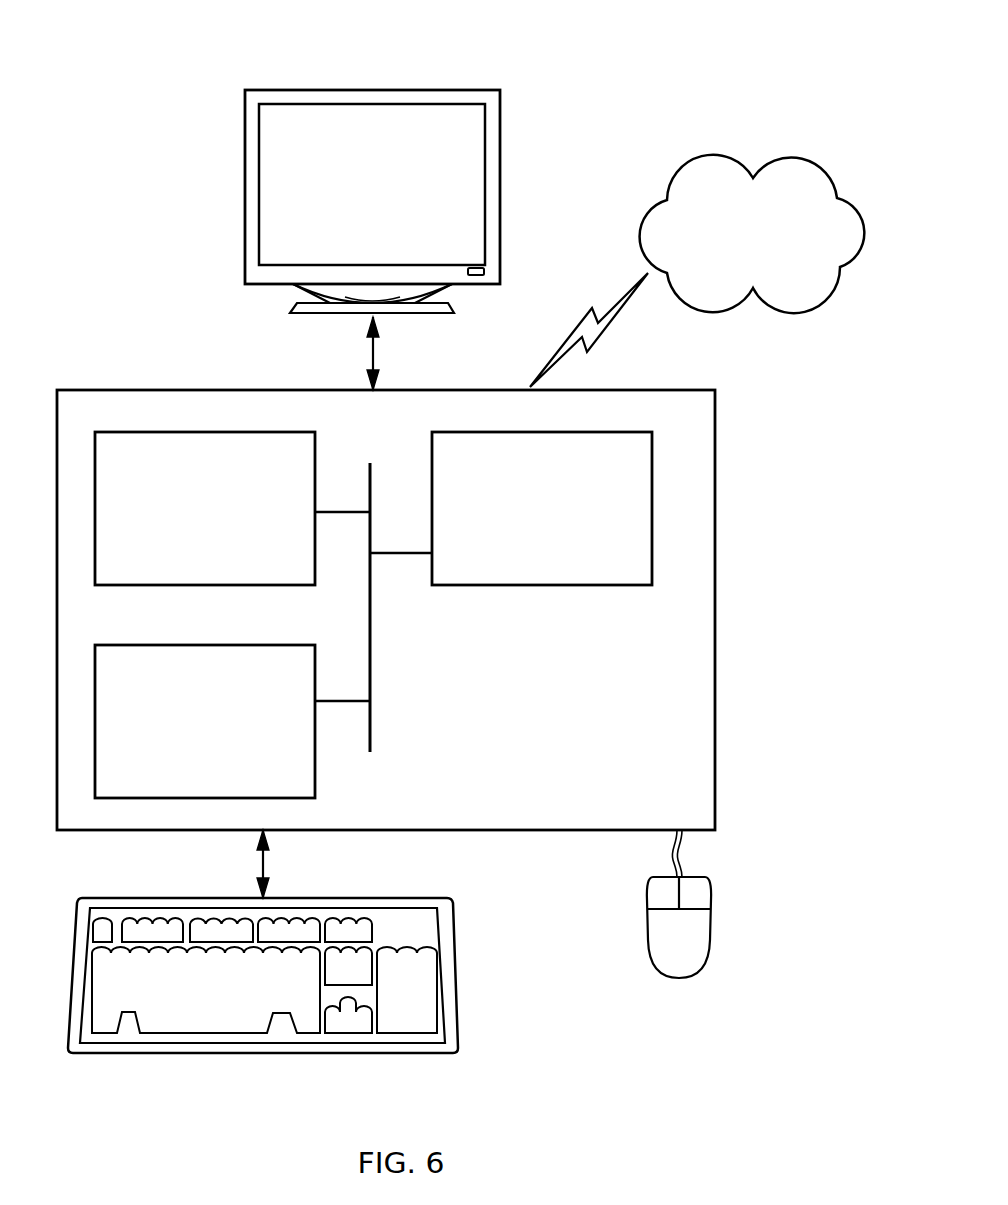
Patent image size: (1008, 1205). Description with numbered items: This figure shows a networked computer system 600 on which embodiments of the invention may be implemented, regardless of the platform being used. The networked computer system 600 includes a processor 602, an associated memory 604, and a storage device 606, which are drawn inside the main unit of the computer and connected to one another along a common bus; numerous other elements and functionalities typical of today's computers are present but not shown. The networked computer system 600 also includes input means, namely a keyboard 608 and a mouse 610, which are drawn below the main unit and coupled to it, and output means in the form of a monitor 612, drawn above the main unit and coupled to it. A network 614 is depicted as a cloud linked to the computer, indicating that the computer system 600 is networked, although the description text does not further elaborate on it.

The networked computer system 600 is at (672, 106).
The processor 602 is at (522, 509).
The memory 604 is at (183, 511).
The storage device 606 is at (183, 721).
The keyboard 608 is at (183, 986).
The mouse 610 is at (712, 983).
The monitor 612 is at (353, 194).
The network 614 is at (733, 236).